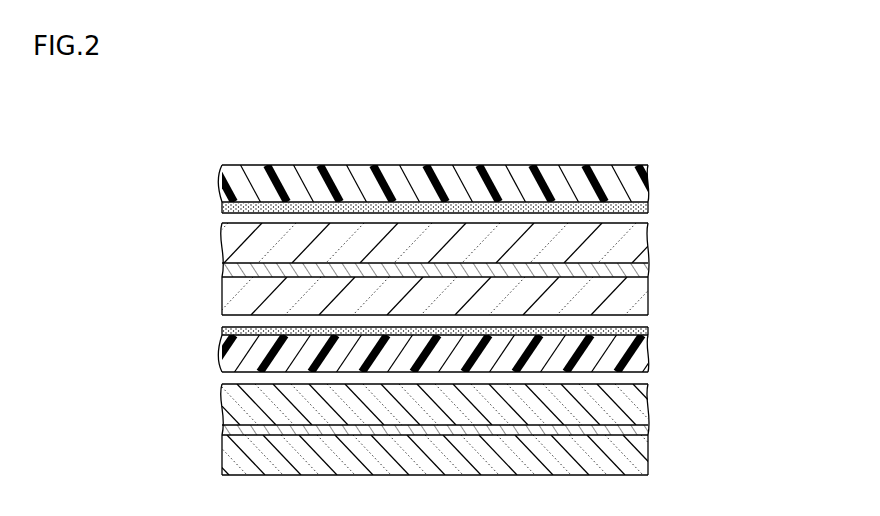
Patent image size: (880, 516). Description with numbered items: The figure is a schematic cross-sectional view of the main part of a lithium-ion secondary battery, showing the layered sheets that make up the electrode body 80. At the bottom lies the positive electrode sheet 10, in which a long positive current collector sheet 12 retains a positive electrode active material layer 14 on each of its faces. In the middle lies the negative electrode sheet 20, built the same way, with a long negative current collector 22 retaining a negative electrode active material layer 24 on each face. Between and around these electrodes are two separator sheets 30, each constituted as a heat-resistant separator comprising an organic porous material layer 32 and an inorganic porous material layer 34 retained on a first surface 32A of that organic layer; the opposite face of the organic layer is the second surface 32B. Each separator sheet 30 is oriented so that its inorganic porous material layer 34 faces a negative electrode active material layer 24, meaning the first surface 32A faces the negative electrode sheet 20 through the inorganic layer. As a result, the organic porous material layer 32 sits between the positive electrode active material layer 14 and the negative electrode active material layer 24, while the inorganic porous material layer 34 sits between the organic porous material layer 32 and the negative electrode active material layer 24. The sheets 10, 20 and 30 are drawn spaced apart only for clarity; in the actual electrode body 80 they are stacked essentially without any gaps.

The electrode body 80 is at (595, 127).
The separator sheet 30 is at (719, 162).
The organic porous material layer 32 is at (648, 188).
The first surface 32A is at (225, 218).
The second surface of gas barrier layer 32B is at (224, 170).
The inorganic porous material layer 34 is at (646, 203).
The negative electrode sheet 20 is at (131, 223).
The negative electrode active material layer 24 is at (224, 232).
The negative current collector 22 is at (224, 270).
The positive electrode sheet 10 is at (131, 392).
The positive electrode active material layer 14 is at (224, 395).
The positive current collector sheet 12 is at (224, 430).